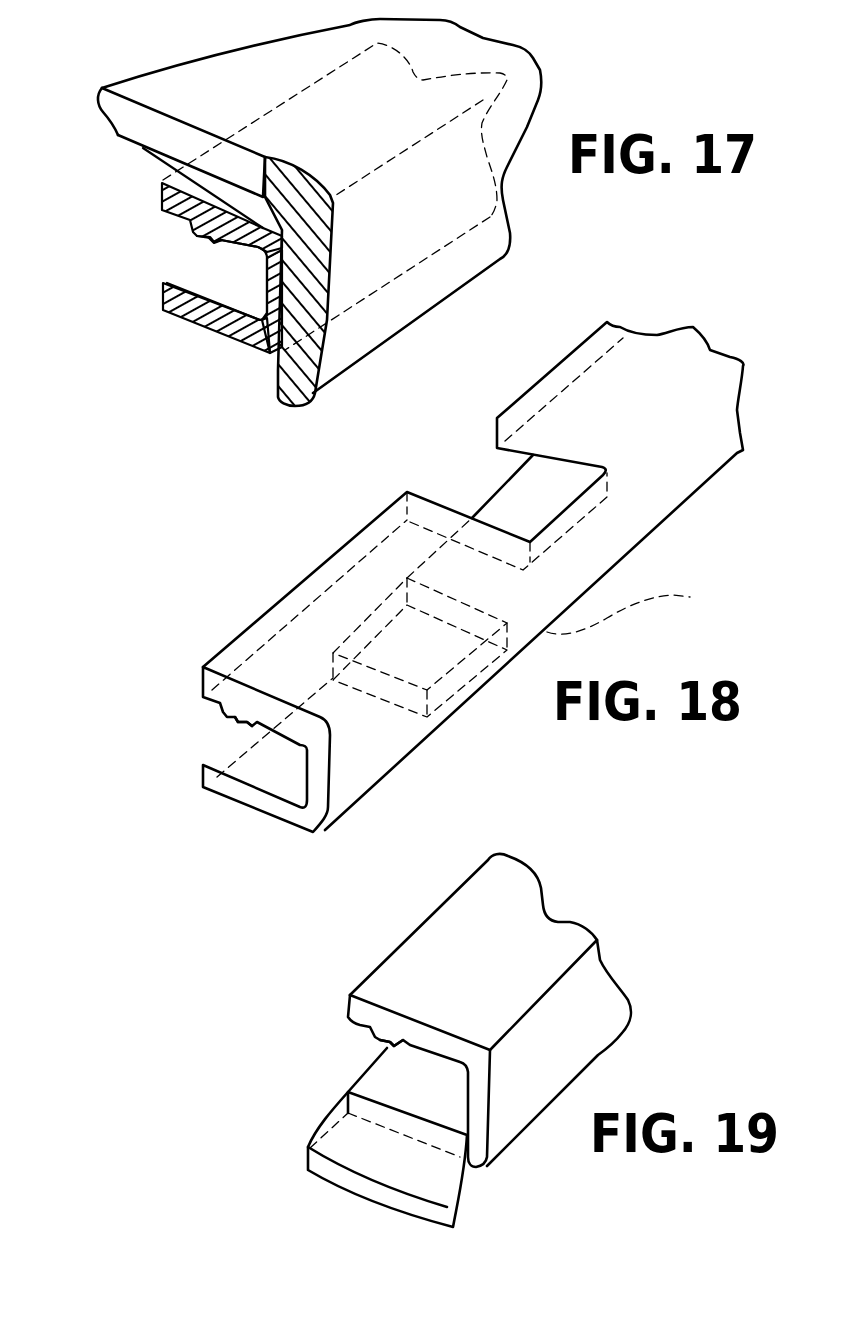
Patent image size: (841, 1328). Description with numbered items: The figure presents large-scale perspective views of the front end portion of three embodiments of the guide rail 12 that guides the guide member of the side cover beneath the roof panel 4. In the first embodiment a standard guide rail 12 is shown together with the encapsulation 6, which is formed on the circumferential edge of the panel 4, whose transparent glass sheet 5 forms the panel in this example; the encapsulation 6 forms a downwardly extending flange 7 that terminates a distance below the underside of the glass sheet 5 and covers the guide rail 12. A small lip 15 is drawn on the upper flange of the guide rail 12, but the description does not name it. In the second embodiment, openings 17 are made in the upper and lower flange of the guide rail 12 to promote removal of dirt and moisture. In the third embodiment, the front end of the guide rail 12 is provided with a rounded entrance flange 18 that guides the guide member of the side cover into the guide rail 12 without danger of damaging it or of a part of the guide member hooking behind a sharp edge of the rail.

In FIG. 17, the panel 4 is at (156, 99).
In FIG. 17, the transparent glass sheet 5 is at (132, 117).
In FIG. 17, the encapsulation 6 is at (162, 173).
In FIG. 17, the downwardly extending flange 7 is at (298, 377).
In FIG. 17, the guide rail 12 is at (213, 317).
In FIG. 18, the guide rail 12 is at (254, 800).
In FIG. 19, the guide rail 12 is at (573, 1013).
In FIG. 17, the retaining lip 15 is at (225, 238).
In FIG. 18, the retaining lip 15 is at (250, 725).
In FIG. 19, the retaining lip 15 is at (400, 1041).
In FIG. 18, the openings 17 is at (547, 505).
In FIG. 19, the rounded entrance flange 18 is at (417, 1170).